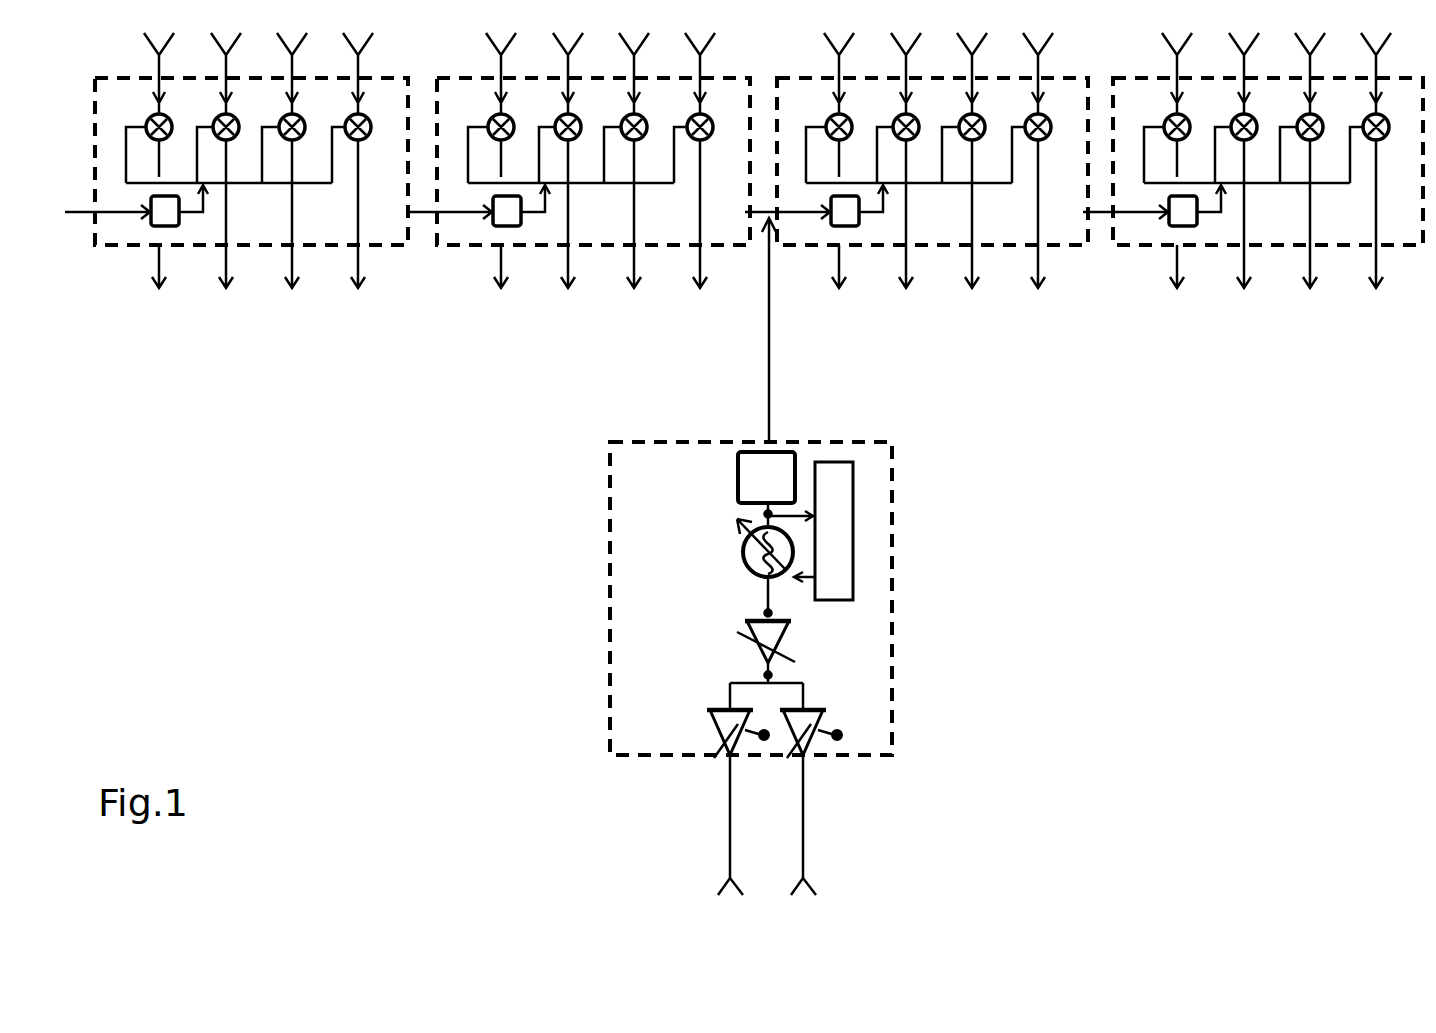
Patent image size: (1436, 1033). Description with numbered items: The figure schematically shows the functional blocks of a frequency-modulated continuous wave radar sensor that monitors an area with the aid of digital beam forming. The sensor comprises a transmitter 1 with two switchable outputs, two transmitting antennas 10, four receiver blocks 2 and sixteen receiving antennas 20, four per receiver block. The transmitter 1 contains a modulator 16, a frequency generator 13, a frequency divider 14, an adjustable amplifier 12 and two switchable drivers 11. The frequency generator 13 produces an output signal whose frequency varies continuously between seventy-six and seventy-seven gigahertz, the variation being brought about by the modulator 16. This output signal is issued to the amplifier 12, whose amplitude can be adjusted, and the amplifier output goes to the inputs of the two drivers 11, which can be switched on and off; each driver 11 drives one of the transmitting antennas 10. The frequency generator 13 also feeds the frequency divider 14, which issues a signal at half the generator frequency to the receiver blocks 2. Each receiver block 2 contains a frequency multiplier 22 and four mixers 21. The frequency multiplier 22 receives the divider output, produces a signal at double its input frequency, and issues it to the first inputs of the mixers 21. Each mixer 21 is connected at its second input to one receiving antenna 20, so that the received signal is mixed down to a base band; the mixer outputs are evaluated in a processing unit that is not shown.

The transmitter 1 is at (862, 605).
The receiver block 2 is at (187, 245).
The transmitting antenna 10 is at (842, 885).
The switchable driver 11 is at (838, 797).
The adjustable amplifier 12 is at (747, 631).
The frequency generator 13 is at (752, 553).
The frequency divider 14 is at (790, 452).
The modulator 16 is at (850, 476).
The receiving antenna 20 is at (1395, 60).
The mixer 21 is at (722, 153).
The frequency multiplier 22 is at (1170, 228).